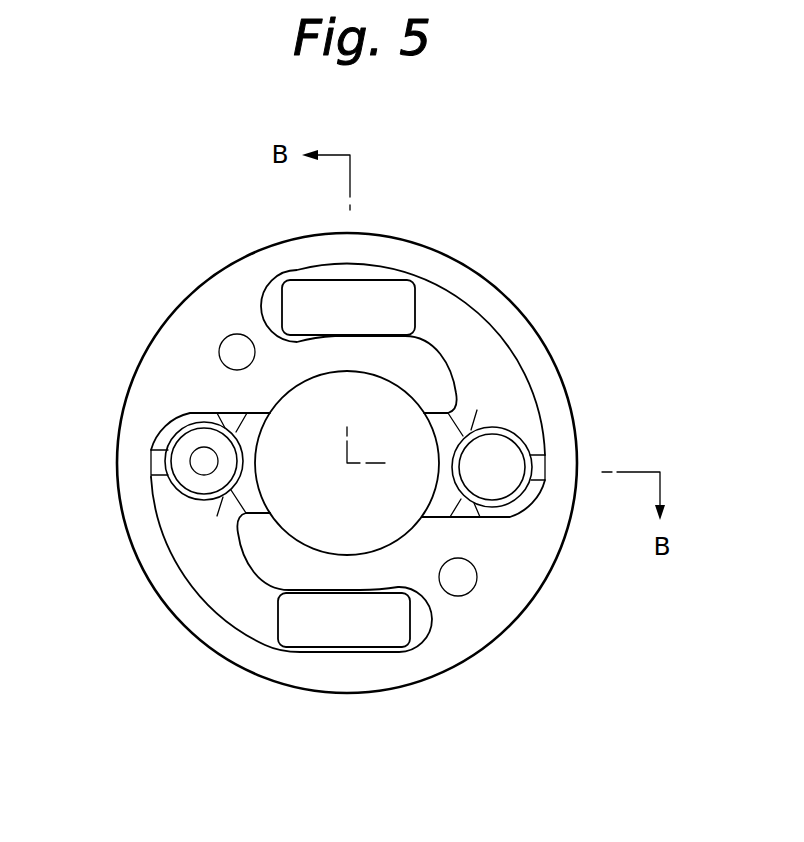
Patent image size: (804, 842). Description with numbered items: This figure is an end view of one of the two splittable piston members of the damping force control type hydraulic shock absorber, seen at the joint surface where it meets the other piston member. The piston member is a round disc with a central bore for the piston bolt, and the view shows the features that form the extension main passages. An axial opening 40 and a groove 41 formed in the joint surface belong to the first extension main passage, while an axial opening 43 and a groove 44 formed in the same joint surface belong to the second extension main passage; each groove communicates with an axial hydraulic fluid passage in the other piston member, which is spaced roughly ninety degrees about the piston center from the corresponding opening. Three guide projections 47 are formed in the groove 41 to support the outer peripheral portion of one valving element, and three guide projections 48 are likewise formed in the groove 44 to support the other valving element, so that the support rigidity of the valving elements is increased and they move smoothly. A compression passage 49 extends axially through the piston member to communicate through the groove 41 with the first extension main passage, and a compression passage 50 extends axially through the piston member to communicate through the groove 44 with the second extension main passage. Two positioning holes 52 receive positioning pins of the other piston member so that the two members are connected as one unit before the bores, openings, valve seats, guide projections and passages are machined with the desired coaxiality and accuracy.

The axial opening 40 is at (514, 459).
The groove 41 is at (480, 353).
The axial opening 43 is at (200, 460).
The groove 44 is at (240, 604).
The guide projections 47 is at (465, 420).
The guide projections 48 is at (235, 418).
The compression passage 49 is at (378, 310).
The compression passage 50 is at (347, 620).
The positioning holes 52 is at (236, 348).